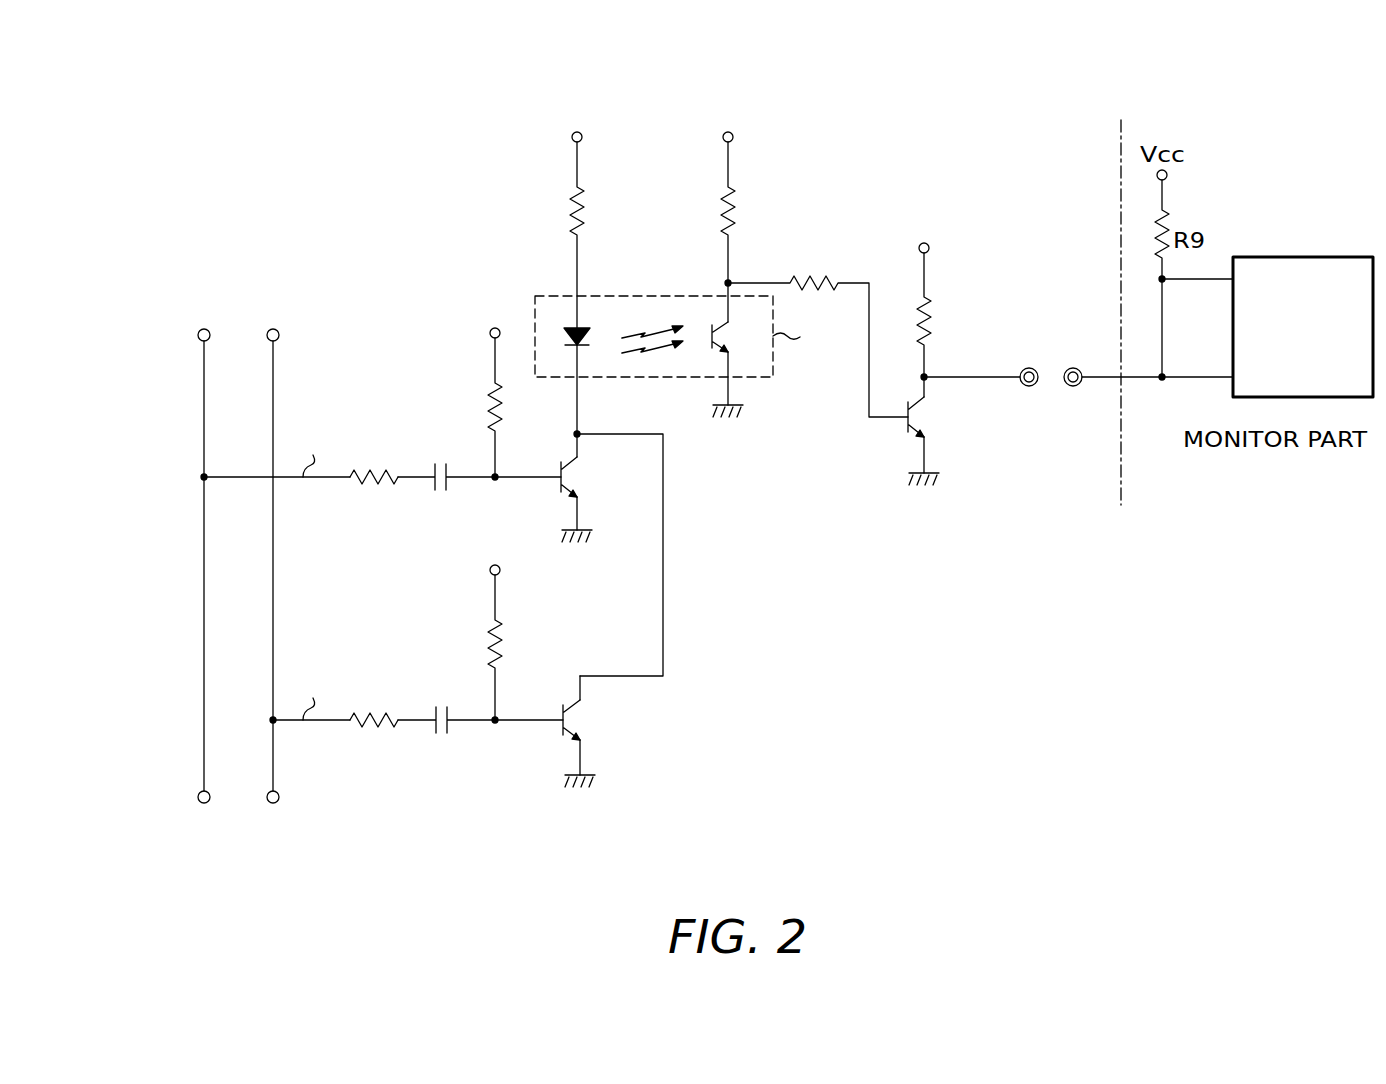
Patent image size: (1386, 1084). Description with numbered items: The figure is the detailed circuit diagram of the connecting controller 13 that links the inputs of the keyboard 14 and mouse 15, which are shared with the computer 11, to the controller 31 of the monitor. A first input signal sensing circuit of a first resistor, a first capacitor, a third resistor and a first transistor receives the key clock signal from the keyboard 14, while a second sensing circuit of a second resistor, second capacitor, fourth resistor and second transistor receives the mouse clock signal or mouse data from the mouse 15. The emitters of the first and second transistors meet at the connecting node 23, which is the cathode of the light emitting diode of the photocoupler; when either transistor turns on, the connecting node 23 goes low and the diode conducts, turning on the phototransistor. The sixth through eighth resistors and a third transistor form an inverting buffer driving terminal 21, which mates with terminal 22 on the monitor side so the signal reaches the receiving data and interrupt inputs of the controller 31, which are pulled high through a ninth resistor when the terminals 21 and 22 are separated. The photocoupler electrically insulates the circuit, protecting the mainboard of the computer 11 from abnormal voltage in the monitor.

The computer 11 is at (272, 325).
The connecting controller 13 is at (993, 176).
The keyboard 14 is at (198, 799).
The mouse 15 is at (279, 799).
The terminal 21 is at (1029, 367).
The terminal 22 is at (1073, 367).
The connecting node 23 is at (582, 432).
The controller 31 is at (1315, 257).